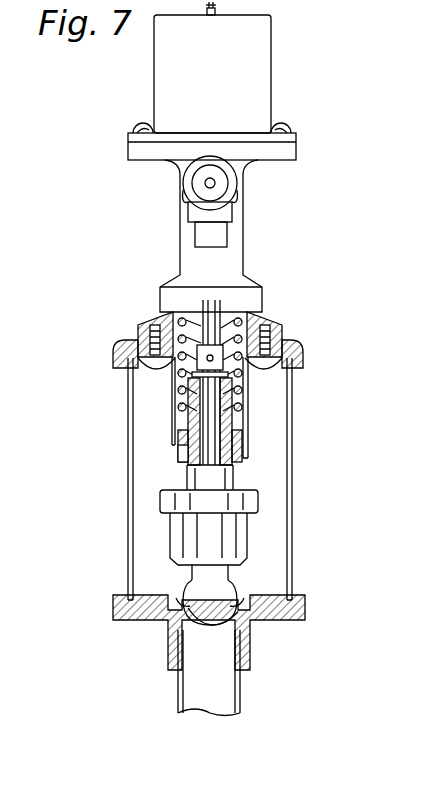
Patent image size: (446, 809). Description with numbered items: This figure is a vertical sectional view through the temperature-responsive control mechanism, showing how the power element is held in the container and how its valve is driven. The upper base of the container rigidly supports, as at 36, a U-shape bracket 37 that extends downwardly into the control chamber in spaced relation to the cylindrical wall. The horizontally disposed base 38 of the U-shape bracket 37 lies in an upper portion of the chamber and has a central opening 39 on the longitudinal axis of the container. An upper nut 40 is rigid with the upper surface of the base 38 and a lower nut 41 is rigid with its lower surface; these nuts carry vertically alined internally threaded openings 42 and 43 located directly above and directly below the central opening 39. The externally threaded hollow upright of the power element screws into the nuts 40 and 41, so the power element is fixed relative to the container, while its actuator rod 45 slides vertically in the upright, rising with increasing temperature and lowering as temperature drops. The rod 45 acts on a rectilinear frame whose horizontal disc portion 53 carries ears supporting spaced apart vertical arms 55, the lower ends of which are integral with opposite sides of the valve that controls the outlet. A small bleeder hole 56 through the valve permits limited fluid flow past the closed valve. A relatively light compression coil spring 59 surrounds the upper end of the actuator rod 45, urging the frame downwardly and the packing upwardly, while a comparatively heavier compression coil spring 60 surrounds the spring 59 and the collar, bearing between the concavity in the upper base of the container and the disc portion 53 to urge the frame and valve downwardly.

The rigid support 36 is at (130, 372).
The U-shape bracket 37 is at (247, 395).
The base of U-shape bracket 38 is at (243, 462).
The central opening 39 is at (178, 455).
The upper nut 40 is at (177, 438).
The lower nut 41 is at (180, 465).
The internally threaded opening 42 is at (174, 433).
The internally threaded opening 43 is at (190, 458).
The actuator rod 45 is at (247, 424).
The horizontal disc portion 53 is at (170, 423).
The vertical arms 55 is at (223, 578).
The bleeder hole 56 is at (243, 623).
The compression coil spring 59 is at (248, 320).
The compression coil spring 60 is at (280, 325).